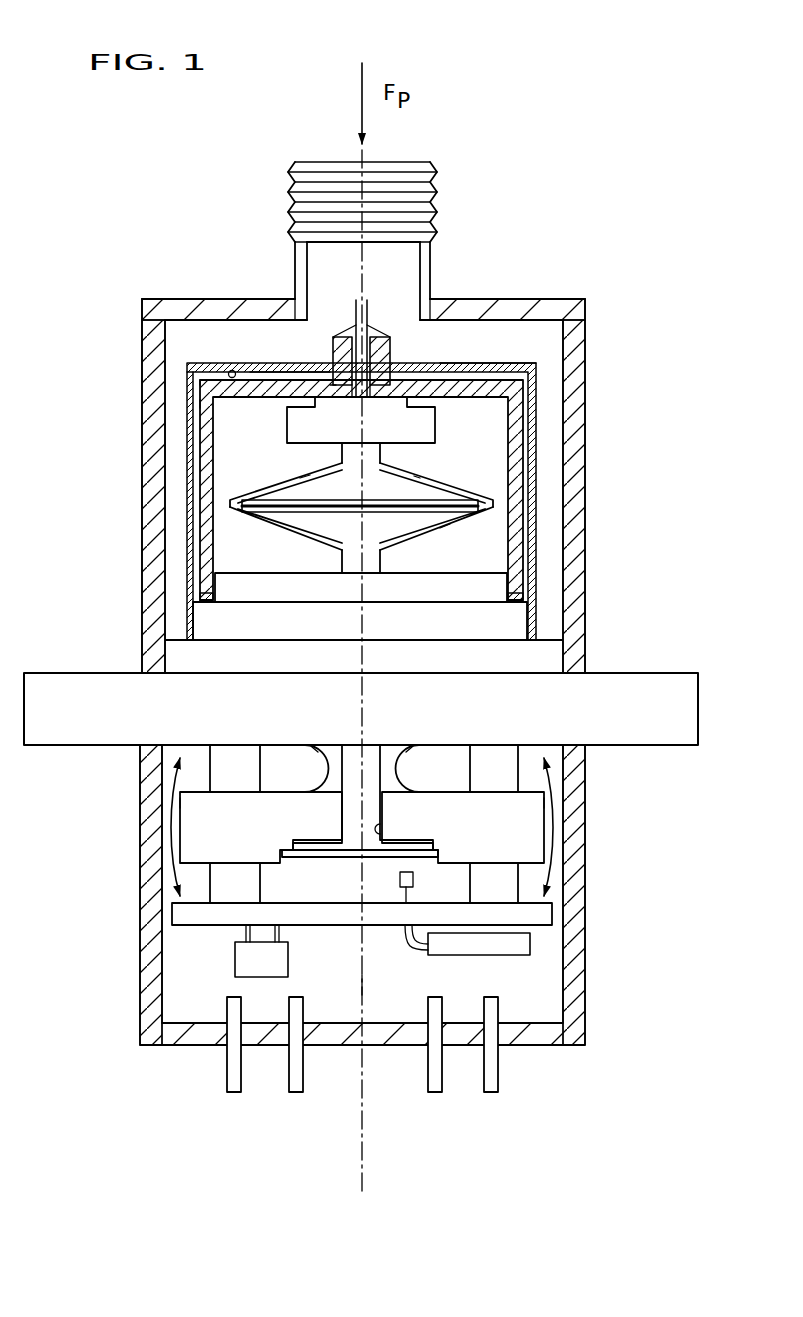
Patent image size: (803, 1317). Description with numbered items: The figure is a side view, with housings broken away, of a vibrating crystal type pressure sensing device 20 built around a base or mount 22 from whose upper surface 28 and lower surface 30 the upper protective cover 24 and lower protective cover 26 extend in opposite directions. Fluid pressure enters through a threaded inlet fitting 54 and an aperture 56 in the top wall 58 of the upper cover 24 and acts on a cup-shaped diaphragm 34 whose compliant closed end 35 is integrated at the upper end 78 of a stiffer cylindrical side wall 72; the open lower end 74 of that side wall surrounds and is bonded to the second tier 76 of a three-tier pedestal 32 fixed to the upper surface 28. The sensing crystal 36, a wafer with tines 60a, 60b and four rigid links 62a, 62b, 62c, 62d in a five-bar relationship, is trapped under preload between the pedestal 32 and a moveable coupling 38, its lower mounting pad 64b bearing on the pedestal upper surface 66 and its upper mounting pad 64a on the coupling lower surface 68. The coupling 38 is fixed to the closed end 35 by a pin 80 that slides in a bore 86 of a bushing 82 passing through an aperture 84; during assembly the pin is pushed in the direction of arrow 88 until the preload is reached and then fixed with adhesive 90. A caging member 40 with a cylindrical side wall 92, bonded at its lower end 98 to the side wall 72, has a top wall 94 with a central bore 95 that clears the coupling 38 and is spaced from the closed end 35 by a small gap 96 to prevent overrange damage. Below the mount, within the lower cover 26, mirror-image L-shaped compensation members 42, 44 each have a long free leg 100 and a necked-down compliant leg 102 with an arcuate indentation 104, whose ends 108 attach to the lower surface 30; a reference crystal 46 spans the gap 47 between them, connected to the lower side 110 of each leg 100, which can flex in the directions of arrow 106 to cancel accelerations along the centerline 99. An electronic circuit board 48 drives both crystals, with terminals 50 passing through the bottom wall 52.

The pressure sensing device 20 is at (192, 198).
The mount 22 is at (698, 718).
The upper protective cover 24 is at (545, 295).
The lower protective cover 26 is at (590, 940).
The upper surface of mount 28 is at (652, 673).
The lower surface of mount 30 is at (660, 745).
The pedestal 32 is at (192, 621).
The diaphragm 34 is at (540, 475).
The closed end 35 is at (190, 364).
The sensing crystal 36 is at (452, 532).
The moveable coupling 38 is at (440, 426).
The caging member 40 is at (198, 404).
The compensation member 42 is at (178, 803).
The compensation member 44 is at (548, 802).
The reference crystal 46 is at (323, 846).
The gap 47 is at (384, 834).
The electronic circuit board 48 is at (560, 912).
The terminals 50 is at (233, 1092).
The bottom wall 52 is at (545, 1046).
The threaded inlet fitting 54 is at (432, 190).
The aperture 56 is at (305, 290).
The top wall 58 is at (162, 299).
The tine 60a is at (292, 480).
The tine 60b is at (430, 480).
The link 62a is at (240, 493).
The link 62b is at (246, 520).
The link 62c is at (402, 552).
The link 62d is at (496, 498).
The upper mounting pad 64a is at (340, 462).
The lower mounting pad 64b is at (340, 562).
The upper surface of pedestal 66 is at (250, 576).
The lower surface of coupling 68 is at (425, 443).
The cylindrical side wall 72 is at (540, 388).
The open lower end 74 is at (580, 608).
The second tier 76 is at (511, 634).
The upper end of side wall 78 is at (200, 383).
The pin 80 is at (338, 345).
The bushing 82 is at (392, 355).
The aperture 84 is at (333, 388).
The bore 86 is at (356, 320).
The arrow 88 is at (330, 262).
The adhesive 90 is at (430, 282).
The cylindrical side wall 92 is at (482, 506).
The top wall 94 is at (494, 365).
The central bore 95 is at (320, 368).
The gap 96 is at (230, 370).
The lower end 98 is at (198, 572).
The longitudinal centerline 99 is at (362, 985).
The free leg 100 is at (222, 831).
The compliant leg 102 is at (334, 742).
The arcuate indentation 104 is at (302, 763).
The arrow 106 is at (165, 838).
The ends of legs 108 is at (321, 746).
The lower side of leg 110 is at (278, 865).